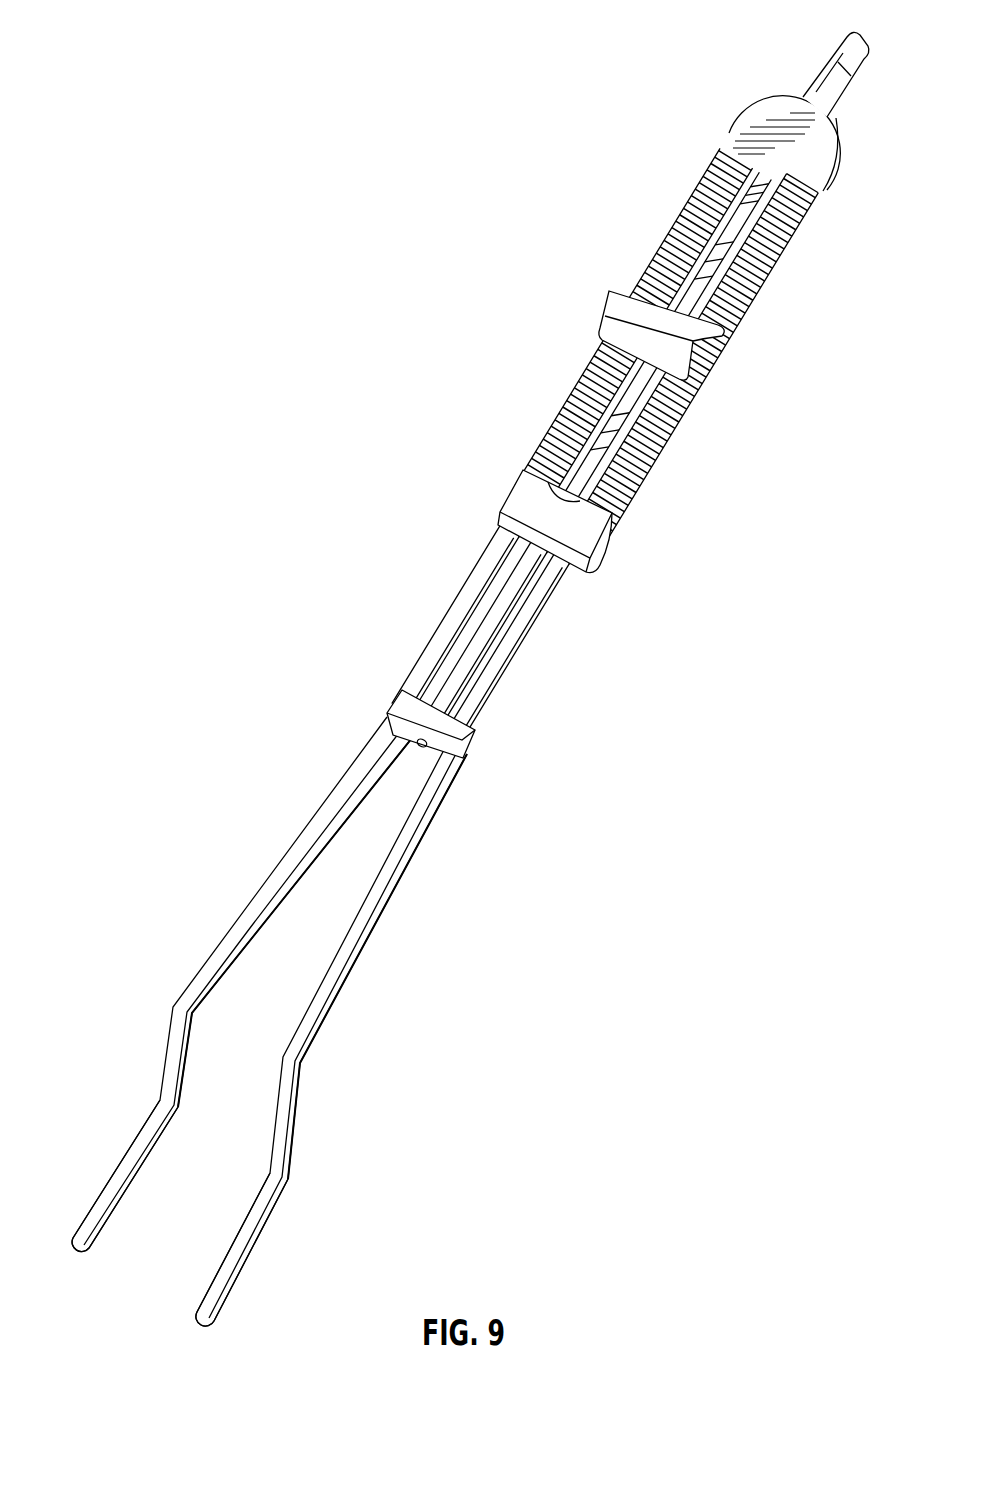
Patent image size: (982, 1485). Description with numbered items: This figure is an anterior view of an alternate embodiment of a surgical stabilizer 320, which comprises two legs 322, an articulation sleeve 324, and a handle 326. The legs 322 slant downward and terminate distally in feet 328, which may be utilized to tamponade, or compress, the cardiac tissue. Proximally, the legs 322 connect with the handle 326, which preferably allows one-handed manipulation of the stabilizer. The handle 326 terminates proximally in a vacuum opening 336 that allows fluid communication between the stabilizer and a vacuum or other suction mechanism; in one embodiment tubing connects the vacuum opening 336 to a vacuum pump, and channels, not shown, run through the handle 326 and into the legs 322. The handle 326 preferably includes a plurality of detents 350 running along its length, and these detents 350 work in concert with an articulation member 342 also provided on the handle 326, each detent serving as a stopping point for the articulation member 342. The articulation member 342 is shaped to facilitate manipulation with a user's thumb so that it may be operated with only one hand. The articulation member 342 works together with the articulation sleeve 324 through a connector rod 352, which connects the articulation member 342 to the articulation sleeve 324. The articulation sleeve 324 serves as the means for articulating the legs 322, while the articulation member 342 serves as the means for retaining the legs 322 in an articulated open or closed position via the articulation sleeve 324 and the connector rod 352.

The surgical stabilizer 320 is at (338, 630).
The legs 322 is at (325, 983).
The articulation sleeve 324 is at (453, 733).
The handle 326 is at (703, 100).
The feet 328 is at (305, 1174).
The vacuum opening 336 is at (846, 52).
The articulation member 342 is at (733, 343).
The detents 350 is at (657, 463).
The connector rod 352 is at (513, 587).